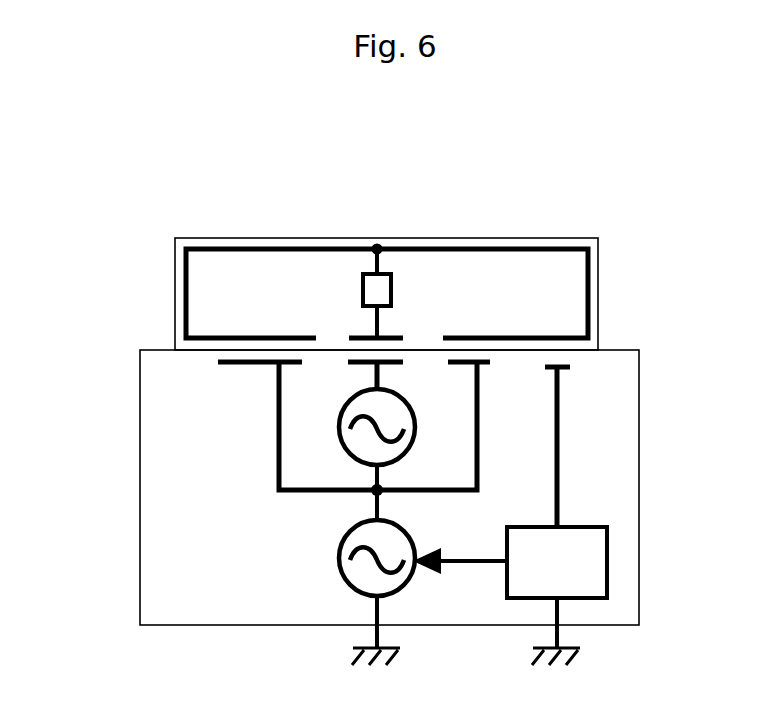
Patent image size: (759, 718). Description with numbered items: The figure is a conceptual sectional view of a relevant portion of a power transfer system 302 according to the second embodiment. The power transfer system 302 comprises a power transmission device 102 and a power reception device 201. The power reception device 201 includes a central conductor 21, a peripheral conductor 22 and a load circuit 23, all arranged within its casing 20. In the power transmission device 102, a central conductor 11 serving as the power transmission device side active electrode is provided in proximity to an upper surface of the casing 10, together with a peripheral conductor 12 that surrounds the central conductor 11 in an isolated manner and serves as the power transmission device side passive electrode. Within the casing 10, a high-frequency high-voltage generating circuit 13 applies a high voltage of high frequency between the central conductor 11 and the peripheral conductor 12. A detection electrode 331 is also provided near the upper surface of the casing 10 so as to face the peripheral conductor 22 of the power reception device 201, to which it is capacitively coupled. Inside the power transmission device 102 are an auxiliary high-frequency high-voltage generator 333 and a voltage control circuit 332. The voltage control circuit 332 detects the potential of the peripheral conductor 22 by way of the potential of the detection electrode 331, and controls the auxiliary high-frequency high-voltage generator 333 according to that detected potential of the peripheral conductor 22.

The power transfer system 302 is at (625, 148).
The power reception device 201 is at (148, 294).
The casing 20 is at (598, 238).
The peripheral conductor 22 is at (588, 290).
The central conductor 21 is at (395, 335).
The load circuit 23 is at (363, 289).
The power transmission device 102 is at (107, 484).
The casing 10 is at (640, 350).
The peripheral conductor 12 is at (237, 366).
The central conductor 11 is at (360, 364).
The high-frequency high-voltage generating circuit 13 is at (415, 418).
The detection electrode 331 is at (565, 370).
The voltage control circuit 332 is at (582, 527).
The auxiliary high-frequency high-voltage generator 333 is at (403, 532).